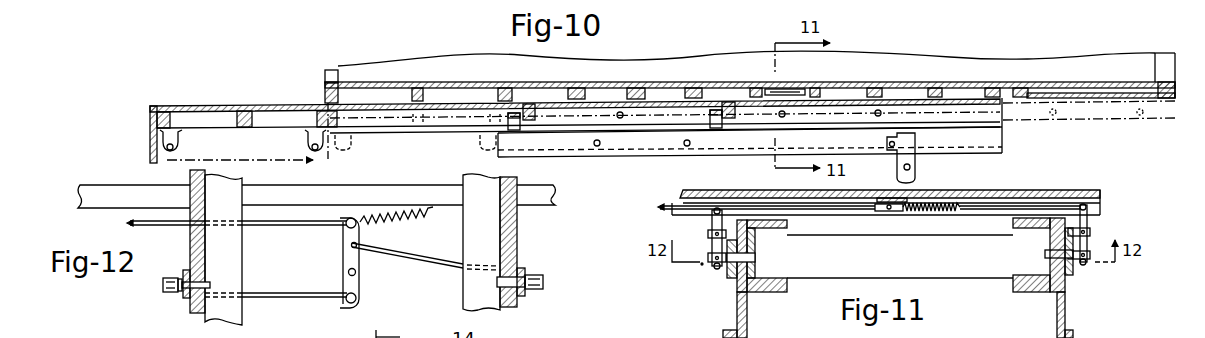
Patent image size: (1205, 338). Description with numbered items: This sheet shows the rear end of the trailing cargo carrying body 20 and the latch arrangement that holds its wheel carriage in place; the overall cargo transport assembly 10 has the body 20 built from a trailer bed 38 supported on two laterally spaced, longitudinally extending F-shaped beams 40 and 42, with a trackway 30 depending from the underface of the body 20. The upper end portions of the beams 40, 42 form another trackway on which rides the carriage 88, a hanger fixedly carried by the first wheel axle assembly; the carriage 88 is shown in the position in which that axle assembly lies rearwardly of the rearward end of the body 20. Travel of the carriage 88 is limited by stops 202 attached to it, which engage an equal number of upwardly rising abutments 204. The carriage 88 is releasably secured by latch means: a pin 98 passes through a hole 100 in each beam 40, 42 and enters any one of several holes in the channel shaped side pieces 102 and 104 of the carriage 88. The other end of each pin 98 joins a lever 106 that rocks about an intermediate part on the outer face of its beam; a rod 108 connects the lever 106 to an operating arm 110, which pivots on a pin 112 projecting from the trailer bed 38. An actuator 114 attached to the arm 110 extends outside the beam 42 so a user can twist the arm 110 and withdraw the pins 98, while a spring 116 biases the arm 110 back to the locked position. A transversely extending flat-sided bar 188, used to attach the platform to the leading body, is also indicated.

In FIG. 10, the table assembly 10 is at (622, 113).
In FIG. 10, the trailing cargo carrying body 20 is at (1096, 52).
In FIG. 12, the trailing cargo carrying body 20 is at (557, 192).
In FIG. 11, the trailing cargo carrying body 20 is at (1103, 205).
In FIG. 10, the trackway 30 is at (984, 153).
In FIG. 10, the trailer bed 38 is at (545, 82).
In FIG. 11, the trailer bed 38 is at (1102, 189).
In FIG. 12, the beam 40 is at (520, 227).
In FIG. 11, the beam 40 is at (1057, 312).
In FIG. 12, the beam 42 is at (190, 193).
In FIG. 11, the beam 42 is at (747, 318).
In FIG. 10, the carriage 88 is at (277, 103).
In FIG. 12, the carriage 88 is at (244, 258).
In FIG. 11, the carriage 88 is at (785, 272).
In FIG. 12, the pin 98 is at (186, 300).
In FIG. 11, the pin 98 is at (1073, 262).
In FIG. 10, the hole 100 is at (785, 112).
In FIG. 11, the hole 100 is at (1066, 284).
In FIG. 12, the channel shaped side piece 102 is at (463, 235).
In FIG. 11, the channel shaped side piece 102 is at (1036, 230).
In FIG. 12, the channel shaped side piece 104 is at (242, 194).
In FIG. 11, the channel shaped side piece 104 is at (772, 233).
In FIG. 11, the lever 106 is at (1094, 240).
In FIG. 12, the rod 108 is at (300, 298).
In FIG. 11, the rod 108 is at (1035, 208).
In FIG. 12, the operating arm 110 is at (365, 296).
In FIG. 12, the pin 112 is at (347, 272).
In FIG. 12, the actuator 114 is at (310, 220).
In FIG. 11, the actuator 114 is at (780, 207).
In FIG. 12, the spring 116 is at (402, 207).
In FIG. 11, the spring 116 is at (931, 207).
In FIG. 11, the bar 188 is at (1125, 331).
In FIG. 10, the stop 202 is at (526, 103).
In FIG. 11, the stop 202 is at (892, 200).
In FIG. 10, the abutment 204 is at (514, 130).